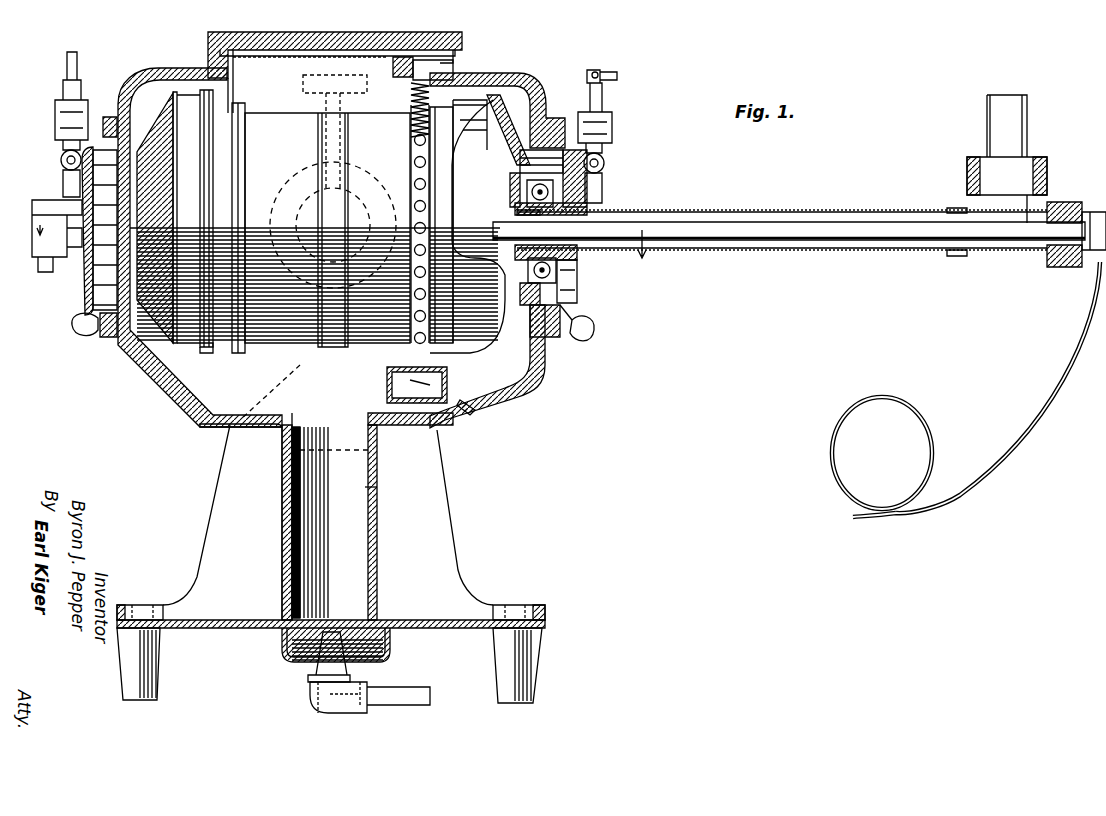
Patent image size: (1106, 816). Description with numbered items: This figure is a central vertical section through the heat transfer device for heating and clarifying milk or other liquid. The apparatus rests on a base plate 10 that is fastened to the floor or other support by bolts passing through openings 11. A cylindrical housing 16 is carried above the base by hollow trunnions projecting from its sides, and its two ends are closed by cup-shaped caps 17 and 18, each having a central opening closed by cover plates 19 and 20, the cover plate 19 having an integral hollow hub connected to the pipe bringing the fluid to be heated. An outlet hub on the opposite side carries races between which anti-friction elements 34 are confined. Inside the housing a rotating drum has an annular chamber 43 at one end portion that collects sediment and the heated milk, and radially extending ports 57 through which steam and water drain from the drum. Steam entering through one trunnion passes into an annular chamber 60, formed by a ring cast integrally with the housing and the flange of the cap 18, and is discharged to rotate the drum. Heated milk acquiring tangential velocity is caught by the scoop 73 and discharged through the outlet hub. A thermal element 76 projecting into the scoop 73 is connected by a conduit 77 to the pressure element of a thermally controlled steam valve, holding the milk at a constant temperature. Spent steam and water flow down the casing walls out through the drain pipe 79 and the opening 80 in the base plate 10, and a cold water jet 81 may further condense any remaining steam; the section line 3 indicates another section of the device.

The section line 3- 3 is at (344, 251).
The base plate 10 is at (440, 627).
The openings 11 is at (165, 687).
The cylindrical housing 16 is at (352, 33).
The cup-shaped cap 17 is at (185, 70).
The cup-shaped cap 18 is at (527, 380).
The cover plate 19 is at (85, 290).
The cover plate 20 is at (577, 305).
The anti-friction elements 34 is at (573, 267).
The annular chamber 43 is at (493, 388).
The radially extending ports 57 is at (238, 228).
The annular chamber 60 is at (430, 67).
The scoop 73 is at (573, 292).
The thermal element 76 is at (743, 240).
The conduit 77 is at (1033, 435).
The drain pipe 79 is at (378, 488).
The opening 80 is at (382, 655).
The cold water jet 81 is at (320, 667).